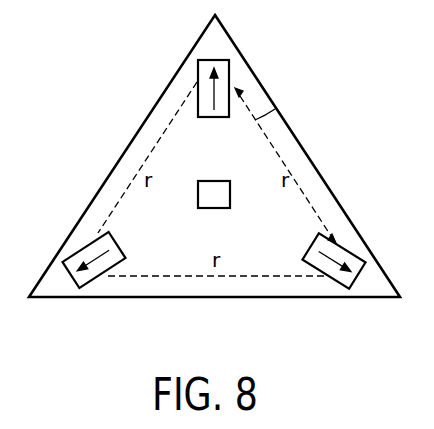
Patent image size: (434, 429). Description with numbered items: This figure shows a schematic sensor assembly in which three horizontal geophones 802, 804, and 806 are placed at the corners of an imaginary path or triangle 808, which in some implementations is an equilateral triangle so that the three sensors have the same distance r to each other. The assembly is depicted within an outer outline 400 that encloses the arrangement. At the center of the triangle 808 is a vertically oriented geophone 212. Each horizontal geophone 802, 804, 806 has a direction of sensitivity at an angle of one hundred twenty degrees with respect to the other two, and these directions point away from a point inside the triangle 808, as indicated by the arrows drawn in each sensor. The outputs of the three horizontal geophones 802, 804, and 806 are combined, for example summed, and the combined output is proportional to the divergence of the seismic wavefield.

The triangular transducer array / mounting plate 400 is at (307, 155).
The horizontal geophone 802 is at (198, 72).
The horizontal geophone 804 is at (93, 290).
The horizontal geophone 806 is at (336, 290).
The triangle 808 is at (276, 108).
The vertically oriented geophone 212 is at (213, 209).